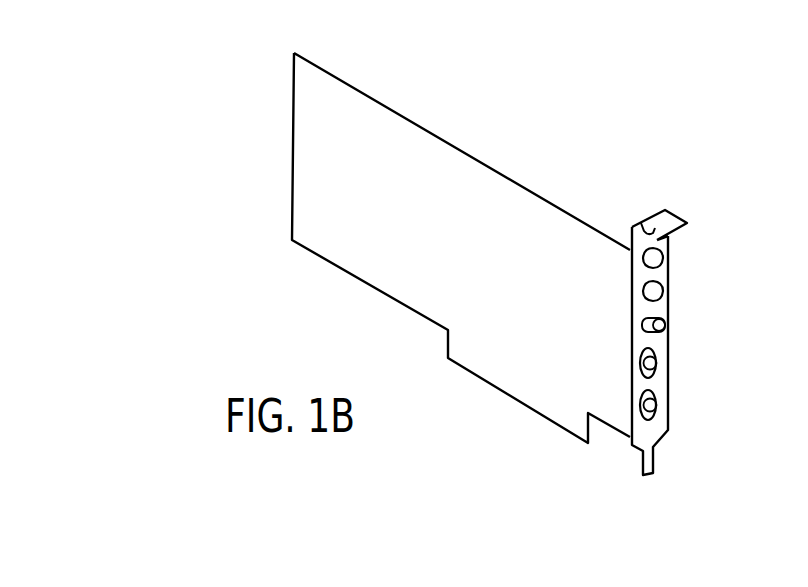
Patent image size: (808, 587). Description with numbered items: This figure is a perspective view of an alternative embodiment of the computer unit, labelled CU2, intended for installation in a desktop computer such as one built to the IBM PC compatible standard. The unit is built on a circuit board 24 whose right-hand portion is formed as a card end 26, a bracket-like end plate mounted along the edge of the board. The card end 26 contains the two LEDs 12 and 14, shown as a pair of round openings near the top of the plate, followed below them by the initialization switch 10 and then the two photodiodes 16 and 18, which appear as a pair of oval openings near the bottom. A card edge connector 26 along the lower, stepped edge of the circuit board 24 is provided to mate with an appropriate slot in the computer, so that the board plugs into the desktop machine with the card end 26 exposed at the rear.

The circuit board 24 is at (523, 187).
The card end 26 is at (657, 214).
The LED 12 is at (668, 260).
The LED 14 is at (668, 296).
The initialization switch 10 is at (668, 330).
The photodiode 16 is at (657, 370).
The photodiode 18 is at (657, 409).
The control unit 2 CU2 is at (736, 224).